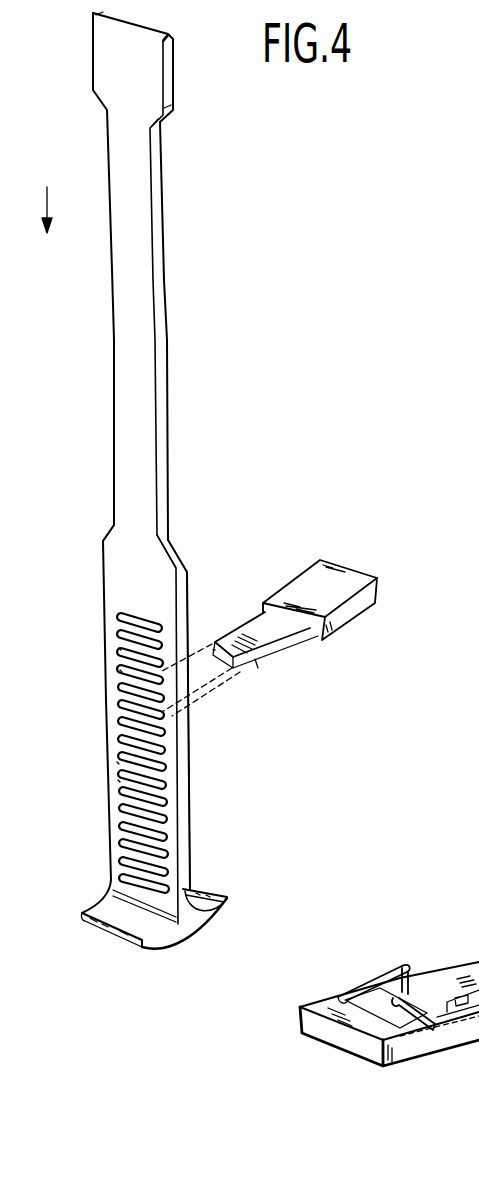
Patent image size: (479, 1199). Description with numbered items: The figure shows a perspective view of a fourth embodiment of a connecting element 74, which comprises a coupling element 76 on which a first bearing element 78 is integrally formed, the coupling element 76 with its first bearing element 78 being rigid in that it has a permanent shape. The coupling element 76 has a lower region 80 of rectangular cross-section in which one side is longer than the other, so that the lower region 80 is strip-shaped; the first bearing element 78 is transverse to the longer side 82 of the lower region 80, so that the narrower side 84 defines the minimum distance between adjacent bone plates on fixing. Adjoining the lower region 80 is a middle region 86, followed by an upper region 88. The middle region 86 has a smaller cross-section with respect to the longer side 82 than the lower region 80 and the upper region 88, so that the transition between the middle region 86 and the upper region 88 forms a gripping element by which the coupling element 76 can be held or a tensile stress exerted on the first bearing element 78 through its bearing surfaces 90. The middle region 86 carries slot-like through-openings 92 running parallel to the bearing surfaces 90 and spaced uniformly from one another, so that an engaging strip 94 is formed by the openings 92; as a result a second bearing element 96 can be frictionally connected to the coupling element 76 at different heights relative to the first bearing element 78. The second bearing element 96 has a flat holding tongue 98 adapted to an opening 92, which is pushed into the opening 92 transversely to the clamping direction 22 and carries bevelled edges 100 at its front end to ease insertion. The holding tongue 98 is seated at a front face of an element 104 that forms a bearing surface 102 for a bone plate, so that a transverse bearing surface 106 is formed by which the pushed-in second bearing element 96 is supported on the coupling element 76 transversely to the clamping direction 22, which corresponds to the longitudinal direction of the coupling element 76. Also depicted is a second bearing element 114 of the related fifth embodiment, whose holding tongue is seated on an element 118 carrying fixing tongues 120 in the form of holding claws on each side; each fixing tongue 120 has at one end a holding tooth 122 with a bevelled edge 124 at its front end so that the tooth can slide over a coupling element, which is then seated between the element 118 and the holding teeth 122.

The clamping direction 22 is at (52, 203).
The connecting element 74 is at (208, 318).
The coupling element 76 is at (130, 578).
The first bearing element 78 is at (206, 926).
The lower region 80 is at (112, 754).
The longer side 82 is at (118, 782).
The narrower side 84 is at (185, 810).
The middle region 86 is at (115, 403).
The upper region 88 is at (105, 42).
The bearing surfaces 90 is at (118, 938).
The slot-like through-openings 92 is at (120, 647).
The engaging strip 94 is at (122, 671).
The second bearing element 96 is at (342, 558).
The holding tongue 98 is at (276, 633).
The bevelled edges 100 is at (258, 664).
The bearing surface 102 is at (337, 625).
The element 104 is at (345, 595).
The transverse bearing surface 106 is at (263, 602).
The second bearing element 114 is at (365, 1070).
The element 118 is at (337, 994).
The fixing tongues 120 is at (356, 985).
The holding tooth 122 is at (403, 964).
The bevelled edge 124 is at (410, 984).